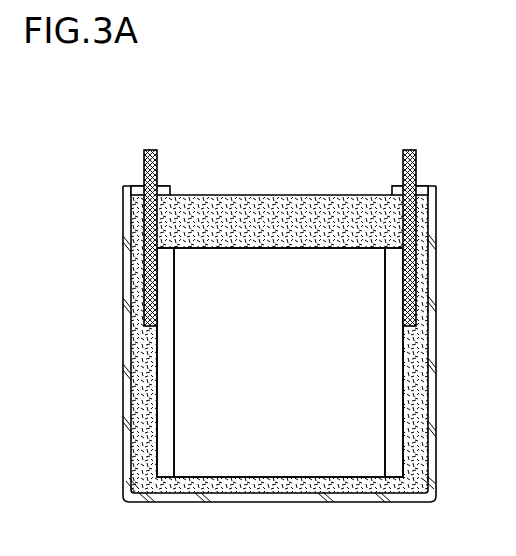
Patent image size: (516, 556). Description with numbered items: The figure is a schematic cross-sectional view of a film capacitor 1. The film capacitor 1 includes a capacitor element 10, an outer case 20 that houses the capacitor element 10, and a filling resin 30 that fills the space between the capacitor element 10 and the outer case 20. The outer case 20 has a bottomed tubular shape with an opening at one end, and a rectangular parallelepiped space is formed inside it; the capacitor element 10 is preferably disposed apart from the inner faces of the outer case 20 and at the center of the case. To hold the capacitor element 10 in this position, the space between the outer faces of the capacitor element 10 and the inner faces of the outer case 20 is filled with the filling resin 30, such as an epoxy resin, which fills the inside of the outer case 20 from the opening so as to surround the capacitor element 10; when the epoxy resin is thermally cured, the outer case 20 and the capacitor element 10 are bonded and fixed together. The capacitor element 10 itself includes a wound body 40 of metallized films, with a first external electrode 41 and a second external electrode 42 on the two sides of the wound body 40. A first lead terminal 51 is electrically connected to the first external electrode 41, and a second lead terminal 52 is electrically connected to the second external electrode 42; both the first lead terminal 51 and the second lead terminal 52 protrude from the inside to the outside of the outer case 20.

The film capacitor 1 is at (94, 161).
The capacitor element 10 is at (303, 232).
The outer case 20 is at (131, 310).
The filling resin 30 is at (244, 203).
The wound body 40 is at (217, 431).
The first external electrode 41 is at (163, 386).
The second external electrode 42 is at (396, 388).
The first lead terminal 51 is at (147, 150).
The second lead terminal 52 is at (410, 150).